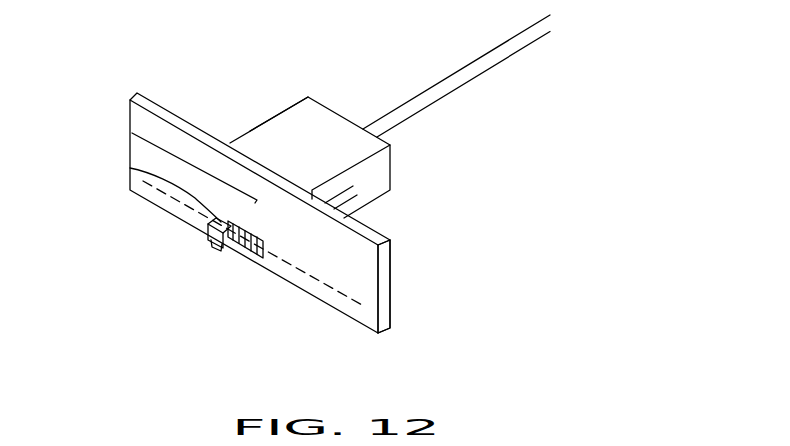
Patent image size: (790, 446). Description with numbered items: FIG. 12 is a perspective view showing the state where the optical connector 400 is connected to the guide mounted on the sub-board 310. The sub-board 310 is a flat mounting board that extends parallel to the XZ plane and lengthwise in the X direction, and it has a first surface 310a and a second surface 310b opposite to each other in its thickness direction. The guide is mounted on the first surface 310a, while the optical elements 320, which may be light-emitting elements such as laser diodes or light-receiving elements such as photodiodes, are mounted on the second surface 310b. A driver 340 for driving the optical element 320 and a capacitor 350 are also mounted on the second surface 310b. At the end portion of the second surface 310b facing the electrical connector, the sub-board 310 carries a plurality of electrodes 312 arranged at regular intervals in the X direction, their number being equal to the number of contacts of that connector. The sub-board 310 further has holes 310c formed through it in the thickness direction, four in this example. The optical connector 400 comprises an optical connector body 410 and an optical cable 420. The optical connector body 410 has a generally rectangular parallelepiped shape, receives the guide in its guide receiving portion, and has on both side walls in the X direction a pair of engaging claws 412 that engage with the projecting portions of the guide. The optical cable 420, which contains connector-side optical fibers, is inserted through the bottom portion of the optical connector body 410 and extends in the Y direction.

The sub-board 310 is at (390, 307).
The first surface 310a is at (393, 253).
The second surface 310b is at (342, 305).
The hole 310c is at (132, 133).
The optical element 320 is at (130, 168).
The driver 340 is at (207, 222).
The capacitor 350 is at (217, 245).
The electrodes 312 is at (253, 262).
The optical connector 400 is at (309, 120).
The optical connector body 410 is at (268, 129).
The engaging claws 412 is at (350, 205).
The optical cable 420 is at (479, 74).